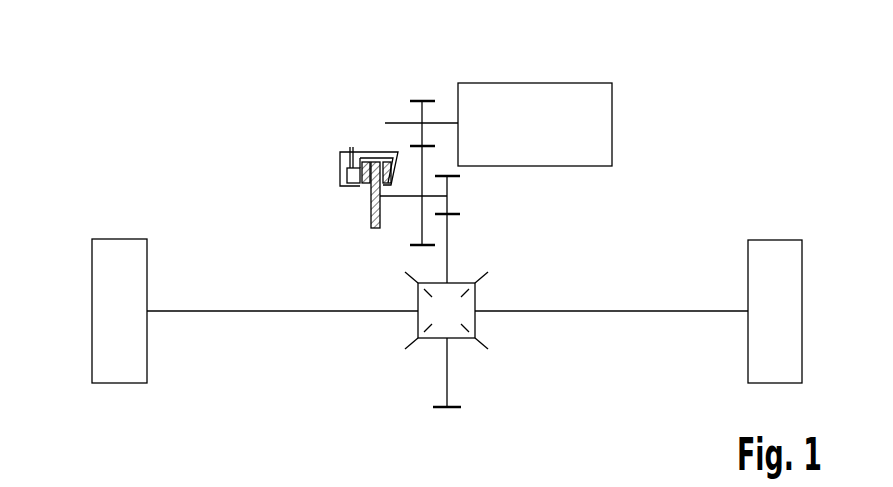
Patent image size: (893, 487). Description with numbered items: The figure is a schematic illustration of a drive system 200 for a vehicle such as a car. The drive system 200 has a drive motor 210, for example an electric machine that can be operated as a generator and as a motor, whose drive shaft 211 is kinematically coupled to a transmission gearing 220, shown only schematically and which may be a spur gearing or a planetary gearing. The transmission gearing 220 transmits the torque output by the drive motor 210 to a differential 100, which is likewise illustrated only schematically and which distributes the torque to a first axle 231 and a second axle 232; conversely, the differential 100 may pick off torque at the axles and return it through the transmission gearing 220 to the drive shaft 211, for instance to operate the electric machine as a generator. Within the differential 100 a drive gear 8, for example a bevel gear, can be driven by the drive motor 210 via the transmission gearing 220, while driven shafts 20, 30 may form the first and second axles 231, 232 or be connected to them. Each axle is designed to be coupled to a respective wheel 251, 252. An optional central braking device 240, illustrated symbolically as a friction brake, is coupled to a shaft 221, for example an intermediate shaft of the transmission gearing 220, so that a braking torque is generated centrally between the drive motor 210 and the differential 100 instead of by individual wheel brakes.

The drive system 200 is at (150, 75).
The drive motor 210 is at (612, 120).
The drive shaft 211 is at (445, 122).
The transmission gearing 220 is at (500, 196).
The shaft 221 is at (395, 198).
The central braking device 240 is at (312, 138).
The differential 100 is at (372, 360).
The drive gear 8 is at (447, 377).
The driven shaft 20 is at (282, 271).
The first axle 231 is at (223, 311).
The driven shaft 30 is at (611, 271).
The second axle 232 is at (652, 311).
The wheel 251 is at (118, 239).
The wheel 252 is at (773, 240).